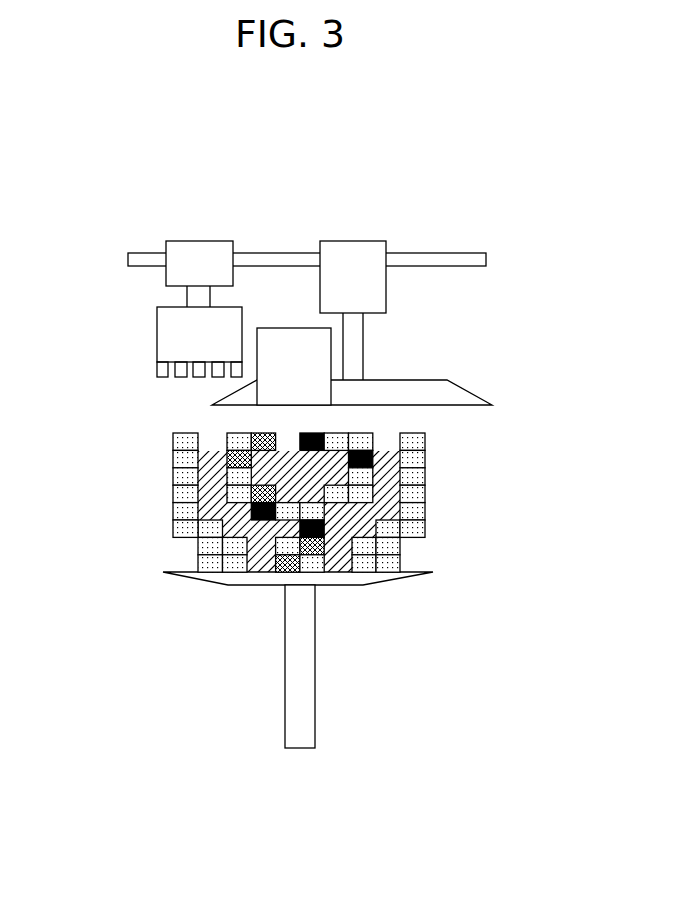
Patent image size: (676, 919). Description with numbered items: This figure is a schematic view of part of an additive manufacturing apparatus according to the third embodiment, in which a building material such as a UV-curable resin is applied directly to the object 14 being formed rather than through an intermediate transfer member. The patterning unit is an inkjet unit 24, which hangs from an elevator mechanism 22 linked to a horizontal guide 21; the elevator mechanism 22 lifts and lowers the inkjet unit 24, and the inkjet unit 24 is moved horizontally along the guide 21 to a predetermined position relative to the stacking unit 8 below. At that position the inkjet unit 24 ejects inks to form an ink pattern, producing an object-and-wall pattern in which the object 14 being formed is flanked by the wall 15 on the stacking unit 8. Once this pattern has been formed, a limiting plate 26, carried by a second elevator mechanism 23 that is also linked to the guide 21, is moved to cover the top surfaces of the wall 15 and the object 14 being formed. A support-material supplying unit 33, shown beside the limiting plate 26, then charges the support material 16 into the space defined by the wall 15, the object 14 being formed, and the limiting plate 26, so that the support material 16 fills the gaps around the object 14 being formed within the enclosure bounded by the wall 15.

The stacking unit 8 is at (355, 613).
The object being formed 14 is at (238, 440).
The wall 15 is at (185, 493).
The support material 16 is at (395, 478).
The guide 21 is at (130, 260).
The elevator mechanism 22 is at (197, 250).
The elevator mechanism 23 is at (353, 250).
The inkjet unit 24 is at (167, 335).
The limiting plate 26 is at (455, 397).
The support-material supplying unit 33 is at (288, 340).